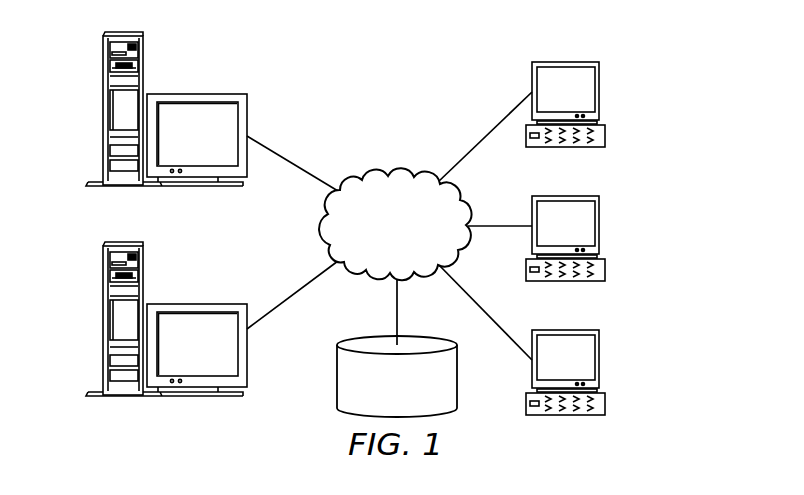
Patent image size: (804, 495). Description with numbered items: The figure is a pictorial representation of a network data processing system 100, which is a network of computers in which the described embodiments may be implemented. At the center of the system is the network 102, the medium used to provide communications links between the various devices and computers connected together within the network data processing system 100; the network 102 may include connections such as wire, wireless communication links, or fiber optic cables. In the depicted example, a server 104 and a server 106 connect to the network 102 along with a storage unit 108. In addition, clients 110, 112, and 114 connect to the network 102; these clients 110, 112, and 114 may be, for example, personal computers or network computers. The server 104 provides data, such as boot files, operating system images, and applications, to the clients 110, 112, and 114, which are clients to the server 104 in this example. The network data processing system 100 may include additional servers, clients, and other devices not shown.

The network data processing system 100 is at (446, 70).
The network 102 is at (368, 178).
The server 104 is at (103, 108).
The server 106 is at (103, 318).
The storage unit 108 is at (337, 383).
The client 110 is at (600, 90).
The client 112 is at (600, 226).
The client 114 is at (600, 360).